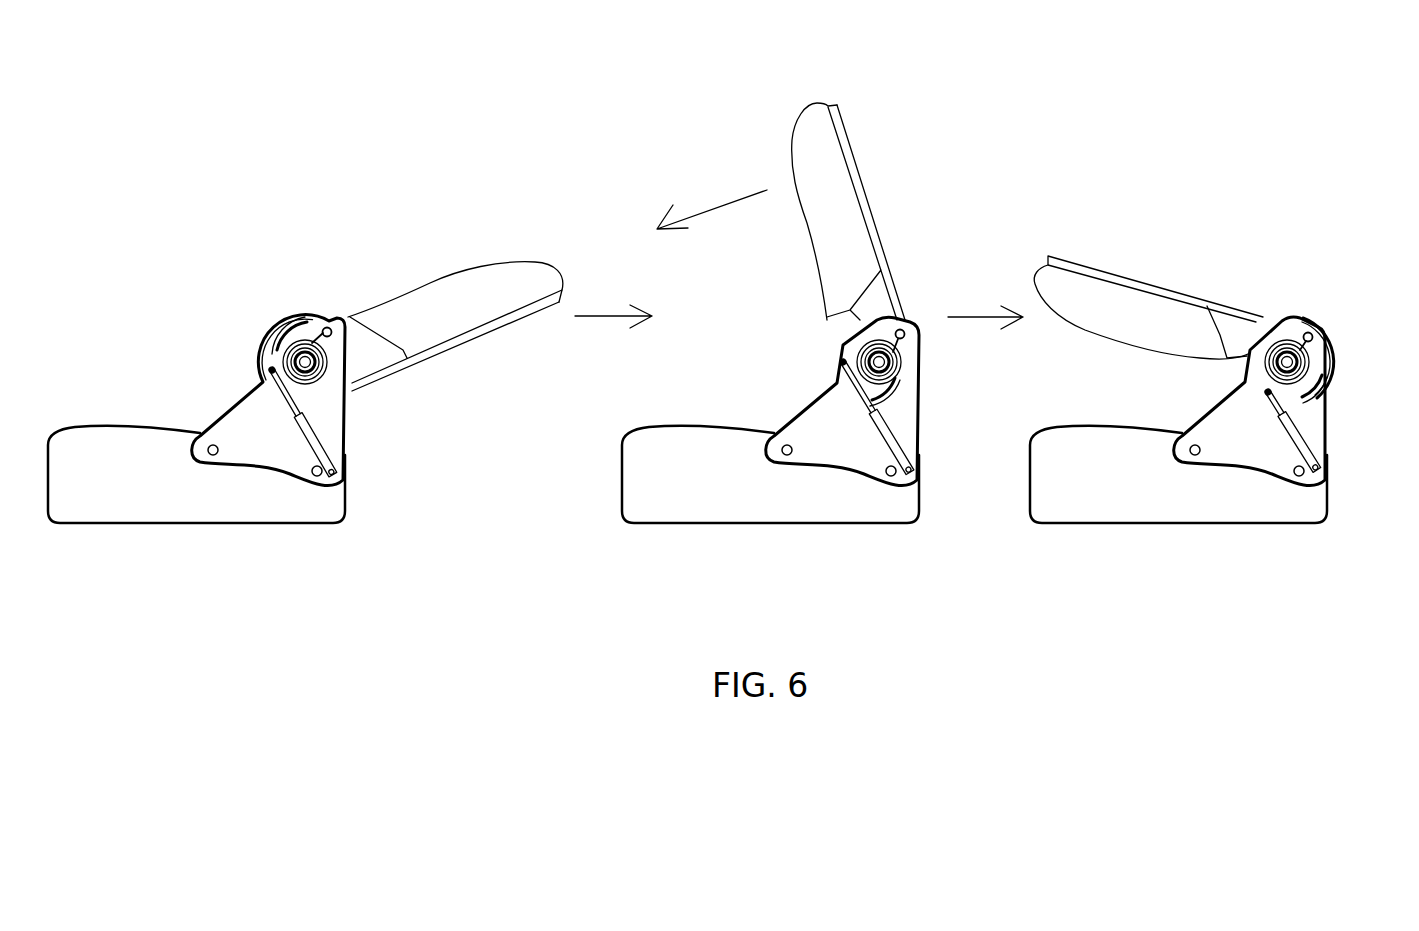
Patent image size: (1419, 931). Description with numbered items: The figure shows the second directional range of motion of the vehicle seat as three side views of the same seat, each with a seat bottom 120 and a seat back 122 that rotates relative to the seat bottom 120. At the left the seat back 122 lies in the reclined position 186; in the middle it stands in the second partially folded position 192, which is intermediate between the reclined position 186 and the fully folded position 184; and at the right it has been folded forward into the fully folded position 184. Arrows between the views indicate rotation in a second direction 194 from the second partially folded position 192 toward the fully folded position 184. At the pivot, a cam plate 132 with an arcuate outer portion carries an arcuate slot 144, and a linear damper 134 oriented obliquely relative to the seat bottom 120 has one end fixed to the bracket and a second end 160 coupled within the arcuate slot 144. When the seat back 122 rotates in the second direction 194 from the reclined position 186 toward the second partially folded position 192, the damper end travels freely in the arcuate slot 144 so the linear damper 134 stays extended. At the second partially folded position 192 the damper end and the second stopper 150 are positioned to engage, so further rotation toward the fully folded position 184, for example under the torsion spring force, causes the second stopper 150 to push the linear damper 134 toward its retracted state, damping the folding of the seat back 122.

The seat bottom 120 is at (346, 501).
The seat back 122 is at (478, 344).
The cam plate 132 is at (300, 314).
The linear damper 134 is at (341, 428).
The arcuate slot 144 is at (284, 350).
The second stopper 150 is at (314, 333).
The second end 160 is at (270, 369).
The fully folded position 184 is at (1291, 178).
The reclined position 186 is at (531, 197).
The second partially folded position 192 is at (950, 64).
The second direction 194 is at (708, 201).